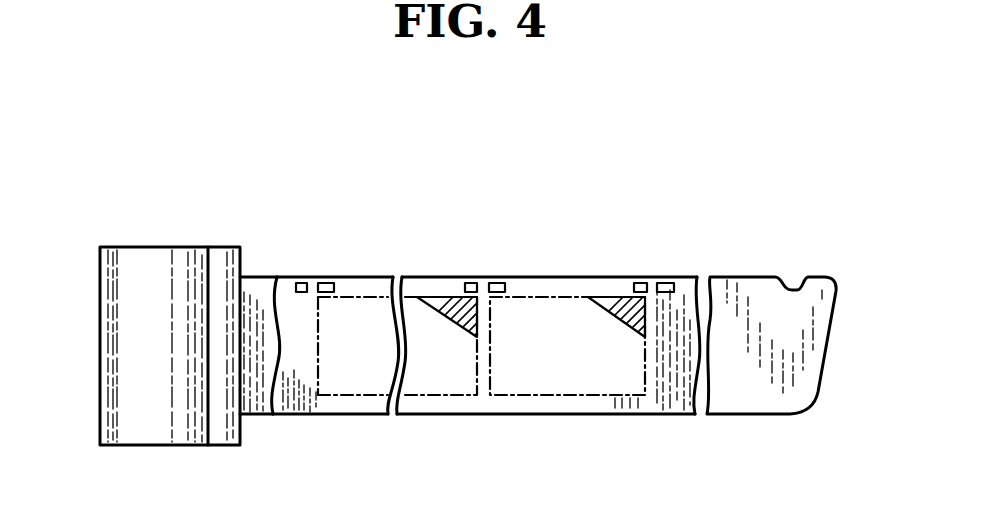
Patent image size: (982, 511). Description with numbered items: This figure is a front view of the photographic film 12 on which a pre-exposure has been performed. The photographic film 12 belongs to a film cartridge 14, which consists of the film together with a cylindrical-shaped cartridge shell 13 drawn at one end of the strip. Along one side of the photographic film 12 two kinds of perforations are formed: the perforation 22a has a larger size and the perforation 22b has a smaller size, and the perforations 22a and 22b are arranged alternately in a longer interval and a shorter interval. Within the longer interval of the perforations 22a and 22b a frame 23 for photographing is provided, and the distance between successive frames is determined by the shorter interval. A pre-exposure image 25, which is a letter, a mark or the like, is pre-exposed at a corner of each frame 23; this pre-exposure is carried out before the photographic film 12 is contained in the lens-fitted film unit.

The photographic film 12 is at (325, 282).
The cartridge shell 13 is at (190, 243).
The film cartridge 14 is at (312, 158).
The perforation 22a is at (497, 280).
The perforation 22b is at (471, 278).
The frame 23 is at (350, 397).
The pre-exposure image 25 is at (456, 322).